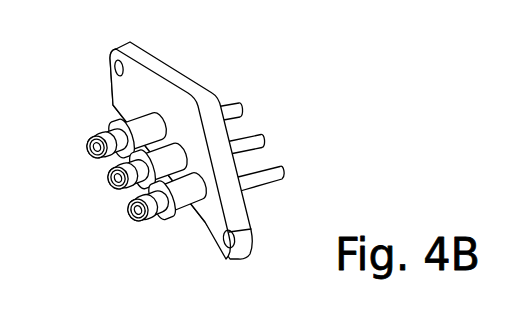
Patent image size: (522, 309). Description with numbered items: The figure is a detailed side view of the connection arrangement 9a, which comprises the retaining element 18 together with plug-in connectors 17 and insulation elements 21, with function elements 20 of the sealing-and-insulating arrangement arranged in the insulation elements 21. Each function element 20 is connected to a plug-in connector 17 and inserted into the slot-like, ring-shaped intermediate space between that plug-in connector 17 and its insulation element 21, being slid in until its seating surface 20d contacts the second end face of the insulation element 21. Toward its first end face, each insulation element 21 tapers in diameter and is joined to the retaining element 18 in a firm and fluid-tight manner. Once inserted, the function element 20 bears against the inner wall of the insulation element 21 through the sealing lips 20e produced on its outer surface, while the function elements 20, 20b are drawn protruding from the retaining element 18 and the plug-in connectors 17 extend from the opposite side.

The connection arrangement 9a is at (239, 76).
The plug-in connector 17 is at (241, 111).
The retaining element 18 is at (243, 215).
The insulation element 21 is at (143, 121).
The sealing lips 20e is at (112, 133).
The function element 20 is at (106, 212).
The plug connector 20b is at (151, 227).
The seating surface 20d is at (173, 210).